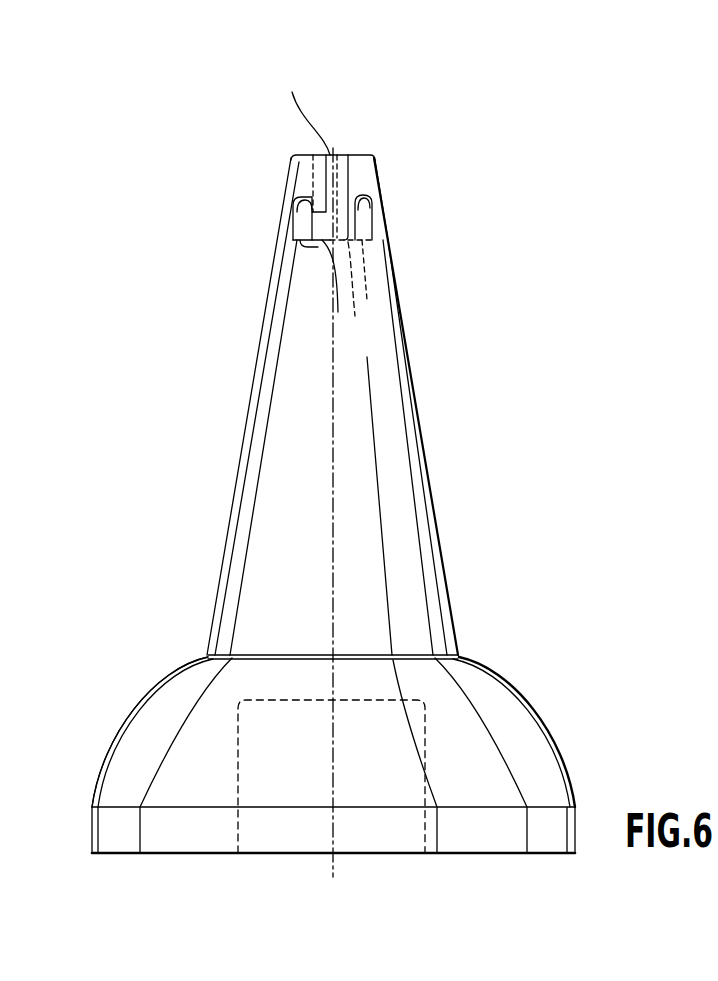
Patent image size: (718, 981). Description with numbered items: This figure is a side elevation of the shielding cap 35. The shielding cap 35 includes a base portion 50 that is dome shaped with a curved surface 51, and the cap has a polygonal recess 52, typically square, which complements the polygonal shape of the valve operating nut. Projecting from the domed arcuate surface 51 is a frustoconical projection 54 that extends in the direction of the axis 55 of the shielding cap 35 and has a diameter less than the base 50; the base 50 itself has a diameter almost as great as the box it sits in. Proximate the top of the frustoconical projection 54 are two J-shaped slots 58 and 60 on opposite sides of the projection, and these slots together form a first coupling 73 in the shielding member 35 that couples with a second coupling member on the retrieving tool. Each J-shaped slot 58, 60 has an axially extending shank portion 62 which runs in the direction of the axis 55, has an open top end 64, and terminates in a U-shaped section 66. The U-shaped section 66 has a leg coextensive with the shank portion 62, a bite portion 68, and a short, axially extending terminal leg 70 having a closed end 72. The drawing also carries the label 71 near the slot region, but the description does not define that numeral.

The shielding cap 35 is at (208, 514).
The base portion 50 is at (509, 679).
The curved surface 51 is at (174, 682).
The polygonal recess 52 is at (270, 758).
The frustoconical projection 54 is at (438, 528).
The axis 55 is at (333, 475).
The J-shaped slot 58 is at (314, 242).
The J-shaped slot 60 is at (382, 253).
The shank portion 62 is at (330, 185).
The open top end 64 is at (314, 155).
The U-shaped section 66 is at (350, 292).
The bite portion 68 is at (316, 222).
The terminal leg 70 is at (290, 218).
The tab base 71 is at (276, 239).
The closed end 72 is at (300, 212).
The first coupling 73 is at (403, 226).